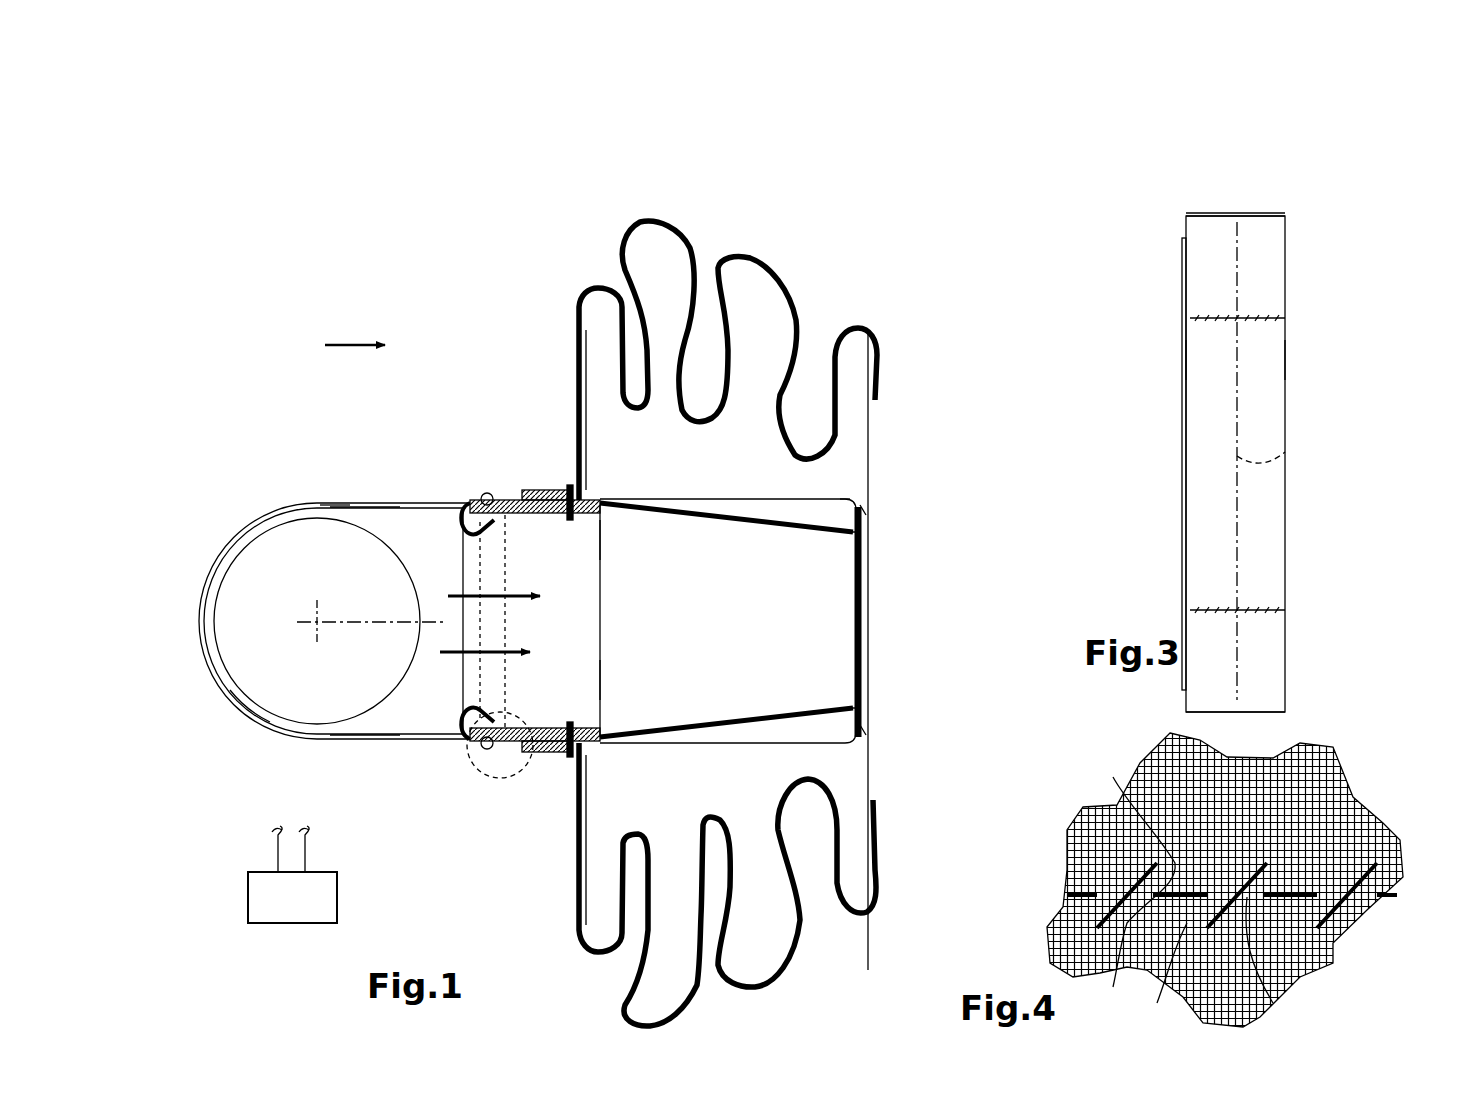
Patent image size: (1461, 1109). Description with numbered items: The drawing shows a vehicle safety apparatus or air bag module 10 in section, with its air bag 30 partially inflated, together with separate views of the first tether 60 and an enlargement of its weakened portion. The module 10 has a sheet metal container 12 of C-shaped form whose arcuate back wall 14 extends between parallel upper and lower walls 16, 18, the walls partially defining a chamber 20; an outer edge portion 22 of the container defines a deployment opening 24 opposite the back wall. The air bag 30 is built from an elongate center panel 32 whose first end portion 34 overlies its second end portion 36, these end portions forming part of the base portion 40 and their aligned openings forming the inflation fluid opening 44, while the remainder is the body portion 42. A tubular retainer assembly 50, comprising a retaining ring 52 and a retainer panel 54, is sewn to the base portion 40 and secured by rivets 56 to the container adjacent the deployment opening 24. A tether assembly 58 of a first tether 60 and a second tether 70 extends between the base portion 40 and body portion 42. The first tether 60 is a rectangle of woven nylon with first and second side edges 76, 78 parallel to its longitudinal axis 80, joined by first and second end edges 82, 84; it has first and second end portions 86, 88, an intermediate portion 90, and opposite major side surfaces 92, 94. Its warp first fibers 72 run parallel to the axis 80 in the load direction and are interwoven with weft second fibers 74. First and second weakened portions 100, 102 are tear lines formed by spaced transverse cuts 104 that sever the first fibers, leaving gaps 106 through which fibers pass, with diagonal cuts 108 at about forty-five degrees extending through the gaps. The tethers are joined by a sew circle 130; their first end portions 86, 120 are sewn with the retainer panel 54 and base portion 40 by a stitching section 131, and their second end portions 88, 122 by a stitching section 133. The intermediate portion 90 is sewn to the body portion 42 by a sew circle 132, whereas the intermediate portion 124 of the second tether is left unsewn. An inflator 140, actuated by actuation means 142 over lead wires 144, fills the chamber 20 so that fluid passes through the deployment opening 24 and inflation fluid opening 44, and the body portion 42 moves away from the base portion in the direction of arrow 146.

In FIG. 1, the air bag module 10 is at (393, 422).
In FIG. 1, the container 12 is at (335, 500).
In FIG. 1, the back wall 14 is at (228, 545).
In FIG. 1, the upper wall 16 is at (420, 502).
In FIG. 1, the lower wall 18 is at (348, 742).
In FIG. 1, the chamber 20 is at (400, 716).
In FIG. 1, the outer edge portion 22 is at (503, 498).
In FIG. 1, the deployment opening 24 is at (520, 770).
In FIG. 1, the air bag 30 is at (612, 268).
In FIG. 1, the center panel 32 is at (794, 282).
In FIG. 1, the first end portion 34 is at (576, 402).
In FIG. 1, the second end portion 36 is at (585, 420).
In FIG. 1, the base portion 40 is at (551, 357).
In FIG. 1, the body portion 42 is at (869, 307).
In FIG. 1, the inflation fluid opening 44 is at (540, 575).
In FIG. 1, the retainer assembly 50 is at (603, 607).
In FIG. 1, the retaining ring 52 is at (483, 497).
In FIG. 1, the retainer panel 54 is at (600, 675).
In FIG. 1, the rivets 56 is at (475, 745).
In FIG. 1, the tether assembly 58 is at (712, 534).
In FIG. 3, the tether assembly 58 is at (1140, 415).
In FIG. 1, the first tether 60 is at (770, 497).
In FIG. 3, the first tether 60 is at (1181, 470).
In FIG. 4, the first tether 60 is at (1075, 796).
In FIG. 1, the second tether 70 is at (762, 534).
In FIG. 3, the second tether 70 is at (1181, 500).
In FIG. 4, the first fibers 72 is at (1218, 775).
In FIG. 4, the second fibers 74 is at (1318, 760).
In FIG. 3, the first side edge 76 is at (1186, 360).
In FIG. 3, the second side edge 78 is at (1288, 365).
In FIG. 3, the longitudinal axis 80 is at (1282, 462).
In FIG. 3, the first end edge 82 is at (1270, 214).
In FIG. 3, the second end edge 84 is at (1262, 712).
In FIG. 1, the first end portion 86 is at (612, 500).
In FIG. 3, the first end portion 86 is at (1205, 265).
In FIG. 1, the second end portion 88 is at (620, 746).
In FIG. 3, the second end portion 88 is at (1210, 672).
In FIG. 1, the intermediate portion 90 is at (868, 590).
In FIG. 3, the intermediate portion 90 is at (1255, 502).
In FIG. 1, the first major side surface 92 is at (862, 498).
In FIG. 3, the first major side surface 92 is at (1215, 570).
In FIG. 1, the second major side surface 94 is at (766, 529).
In FIG. 1, the first weakened portion 100 is at (683, 497).
In FIG. 3, the first weakened portion 100 is at (1255, 318).
In FIG. 4, the first weakened portion 100 is at (1108, 858).
In FIG. 1, the second weakened portion 102 is at (685, 746).
In FIG. 3, the second weakened portion 102 is at (1260, 610).
In FIG. 4, the transverse cuts 104 is at (1122, 815).
In FIG. 4, the gaps 106 is at (1360, 905).
In FIG. 4, the diagonal cuts 108 is at (1065, 910).
In FIG. 1, the first end portion 120 is at (632, 510).
In FIG. 1, the second end portion 122 is at (628, 735).
In FIG. 1, the intermediate portion 124 is at (850, 660).
In FIG. 1, the sew circle 130 is at (853, 533).
In FIG. 1, the stitching section 131 is at (568, 488).
In FIG. 1, the sew circle 132 is at (870, 512).
In FIG. 1, the stitching section 133 is at (568, 752).
In FIG. 1, the inflator 140 is at (263, 707).
In FIG. 1, the actuation means 142 is at (338, 902).
In FIG. 1, the lead wires 144 is at (278, 845).
In FIG. 1, the arrow 146 is at (350, 314).